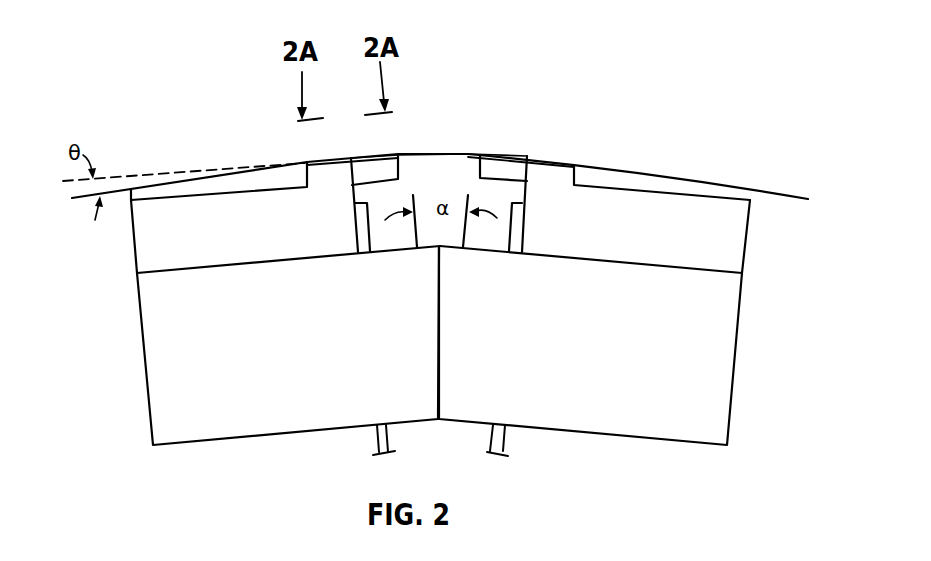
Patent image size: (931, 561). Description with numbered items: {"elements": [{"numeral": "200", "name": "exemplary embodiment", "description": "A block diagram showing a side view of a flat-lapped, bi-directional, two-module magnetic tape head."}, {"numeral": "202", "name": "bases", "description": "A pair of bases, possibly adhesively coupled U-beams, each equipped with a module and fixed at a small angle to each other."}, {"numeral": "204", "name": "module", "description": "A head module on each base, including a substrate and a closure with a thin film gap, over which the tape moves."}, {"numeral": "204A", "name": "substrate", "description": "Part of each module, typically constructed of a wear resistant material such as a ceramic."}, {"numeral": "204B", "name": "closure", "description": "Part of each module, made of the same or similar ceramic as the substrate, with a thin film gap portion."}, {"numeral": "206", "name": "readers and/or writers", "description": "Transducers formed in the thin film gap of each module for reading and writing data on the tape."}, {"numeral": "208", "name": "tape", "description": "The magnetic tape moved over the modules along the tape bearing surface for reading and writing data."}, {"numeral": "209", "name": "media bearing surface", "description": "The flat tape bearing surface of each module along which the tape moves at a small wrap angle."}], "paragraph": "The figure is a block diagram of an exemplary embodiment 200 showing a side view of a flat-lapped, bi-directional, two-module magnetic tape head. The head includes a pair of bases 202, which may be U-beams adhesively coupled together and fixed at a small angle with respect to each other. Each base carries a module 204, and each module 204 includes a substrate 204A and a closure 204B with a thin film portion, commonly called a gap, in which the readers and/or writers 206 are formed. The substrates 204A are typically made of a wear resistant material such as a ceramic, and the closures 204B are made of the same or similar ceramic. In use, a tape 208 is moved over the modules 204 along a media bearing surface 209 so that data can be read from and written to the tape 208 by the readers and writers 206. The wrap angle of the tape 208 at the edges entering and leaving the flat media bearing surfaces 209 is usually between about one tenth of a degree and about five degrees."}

The tiled display assembly 200 is at (180, 122).
The display module body 202 is at (137, 337).
The display tile 204 is at (135, 244).
The first tile top surface 204A is at (190, 222).
The second tile top surface 204B is at (481, 166).
The seam / central region between tiles 206 is at (358, 146).
The cover sheet 208 is at (665, 175).
The thin film layer 209 is at (306, 152).